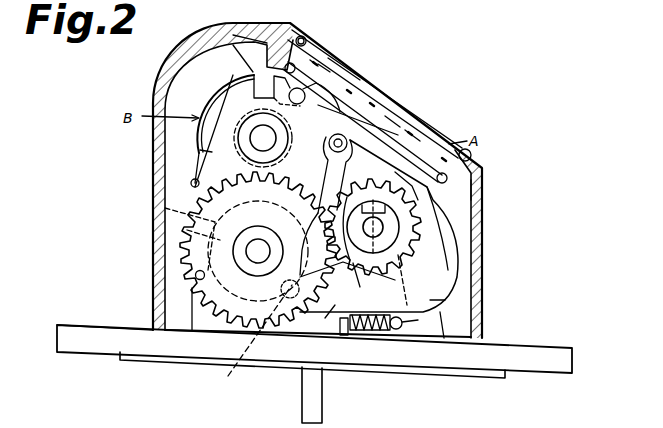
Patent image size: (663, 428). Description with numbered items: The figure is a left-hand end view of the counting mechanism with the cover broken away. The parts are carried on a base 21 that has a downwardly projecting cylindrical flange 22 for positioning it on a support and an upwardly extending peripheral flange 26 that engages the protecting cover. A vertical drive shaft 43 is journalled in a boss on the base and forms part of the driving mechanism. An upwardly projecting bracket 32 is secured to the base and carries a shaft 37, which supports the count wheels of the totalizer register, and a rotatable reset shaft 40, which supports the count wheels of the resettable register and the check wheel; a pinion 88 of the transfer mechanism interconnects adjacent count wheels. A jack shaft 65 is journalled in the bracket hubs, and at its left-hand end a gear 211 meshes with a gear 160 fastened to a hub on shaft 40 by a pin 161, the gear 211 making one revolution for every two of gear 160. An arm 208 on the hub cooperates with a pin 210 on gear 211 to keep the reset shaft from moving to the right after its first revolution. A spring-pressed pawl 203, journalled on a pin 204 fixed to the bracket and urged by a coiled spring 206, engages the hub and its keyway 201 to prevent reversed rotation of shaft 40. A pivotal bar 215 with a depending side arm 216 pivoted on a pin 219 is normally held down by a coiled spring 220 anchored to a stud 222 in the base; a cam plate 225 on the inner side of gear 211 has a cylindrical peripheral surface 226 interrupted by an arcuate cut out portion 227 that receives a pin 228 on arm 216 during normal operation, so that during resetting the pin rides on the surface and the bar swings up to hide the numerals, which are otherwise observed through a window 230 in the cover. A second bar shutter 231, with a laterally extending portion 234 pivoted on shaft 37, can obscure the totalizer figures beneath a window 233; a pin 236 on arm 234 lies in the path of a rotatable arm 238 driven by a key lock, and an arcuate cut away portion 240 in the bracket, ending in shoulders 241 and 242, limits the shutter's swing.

The base 21 is at (570, 361).
The cylindrical flange 22 is at (498, 377).
The peripheral flange 26 is at (443, 340).
The bracket 32 is at (200, 152).
The shaft 37 is at (261, 135).
The shaft 40 is at (385, 229).
The drive shaft 43 is at (302, 418).
The jack shaft 65 is at (257, 247).
The pinion 88 is at (191, 183).
The gear 160 is at (450, 262).
The pin 161 is at (412, 262).
The keyway 201 is at (406, 218).
The spring-pressed pawl 203 is at (348, 180).
The pin 204 is at (387, 118).
The coiled spring 206 is at (408, 131).
The arm 208 is at (357, 268).
The pin 210 is at (195, 275).
The gear 211 is at (192, 288).
The bar 215 is at (482, 184).
The side arm 216 is at (440, 295).
The pin 219 is at (325, 318).
The coiled spring 220 is at (387, 333).
The stud 222 is at (344, 336).
The cam plate 225 is at (187, 236).
The peripheral surface 226 is at (165, 208).
The cut out portion 227 is at (246, 340).
The pin 228 is at (286, 300).
The window 230 is at (440, 134).
The bar shutter 231 is at (256, 74).
The window 233 is at (336, 71).
The laterally extending portion 234 is at (300, 92).
The pin 236 is at (310, 64).
The rotatable arm 238 is at (301, 36).
The arcuate cut away portion 240 is at (233, 45).
The shoulder 241 is at (231, 38).
The shoulder 242 is at (360, 97).